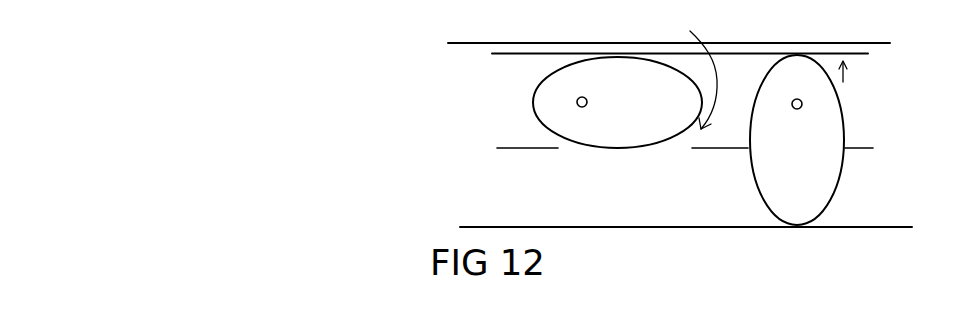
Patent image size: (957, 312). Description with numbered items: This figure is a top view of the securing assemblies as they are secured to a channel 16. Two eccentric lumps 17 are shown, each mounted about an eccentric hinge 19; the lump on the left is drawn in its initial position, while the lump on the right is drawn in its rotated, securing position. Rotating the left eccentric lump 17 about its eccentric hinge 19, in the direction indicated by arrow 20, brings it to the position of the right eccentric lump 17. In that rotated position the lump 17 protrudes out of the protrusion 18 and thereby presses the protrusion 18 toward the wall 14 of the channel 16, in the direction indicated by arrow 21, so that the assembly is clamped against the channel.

The wall 14 is at (726, 49).
The channel 16 is at (476, 223).
The eccentric lump 17 is at (632, 85).
The protrusion 18 is at (512, 147).
The eccentric hinge 19 is at (797, 99).
The arrow 20 is at (692, 69).
The arrow 21 is at (850, 75).